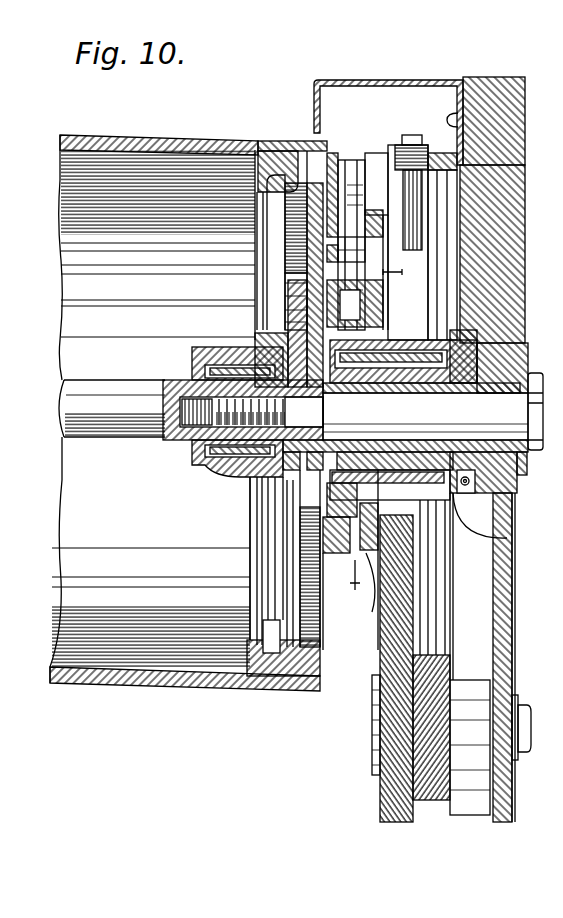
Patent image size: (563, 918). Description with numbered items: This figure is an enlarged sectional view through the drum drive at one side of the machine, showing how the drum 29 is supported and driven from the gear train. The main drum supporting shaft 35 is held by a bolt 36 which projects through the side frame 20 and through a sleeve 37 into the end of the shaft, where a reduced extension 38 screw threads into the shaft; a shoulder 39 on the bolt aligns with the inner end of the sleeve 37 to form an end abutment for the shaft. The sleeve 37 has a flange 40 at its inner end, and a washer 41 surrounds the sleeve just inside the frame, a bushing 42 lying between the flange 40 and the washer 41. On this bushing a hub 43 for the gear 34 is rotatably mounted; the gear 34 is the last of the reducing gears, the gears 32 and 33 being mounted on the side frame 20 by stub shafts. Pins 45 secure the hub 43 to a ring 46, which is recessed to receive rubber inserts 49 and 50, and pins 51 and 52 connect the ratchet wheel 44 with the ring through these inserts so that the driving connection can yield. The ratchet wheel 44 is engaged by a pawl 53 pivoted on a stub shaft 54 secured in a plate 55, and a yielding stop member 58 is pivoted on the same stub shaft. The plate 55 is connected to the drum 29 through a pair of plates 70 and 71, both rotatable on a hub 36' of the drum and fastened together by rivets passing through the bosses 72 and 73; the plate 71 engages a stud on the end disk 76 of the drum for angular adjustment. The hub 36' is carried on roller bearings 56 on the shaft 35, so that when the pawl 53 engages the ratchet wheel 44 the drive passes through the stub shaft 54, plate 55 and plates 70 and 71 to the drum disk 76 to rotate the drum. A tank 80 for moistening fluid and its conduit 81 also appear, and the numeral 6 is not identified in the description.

The drum 29 is at (77, 135).
The main drum supporting shaft 35 is at (78, 380).
The plate 70 is at (304, 194).
The rubber insert 50 is at (258, 297).
The plate 71 is at (233, 274).
The boss 72 is at (282, 500).
The end disk 76 is at (254, 531).
The boss 73 is at (262, 325).
The hub 36' is at (231, 333).
The reduced extension 38 is at (195, 383).
The shoulder 39 is at (304, 412).
The bolt 36 is at (425, 416).
The flange 40 is at (333, 440).
The bushing 42 is at (390, 445).
The sleeve 37 is at (477, 443).
The pins 45 is at (390, 352).
The hub 43 is at (478, 340).
The side frame 20 is at (523, 163).
The plate 55 is at (345, 165).
The yielding stop member 58 is at (358, 165).
The stub shaft 54 is at (350, 253).
The pin 52 is at (365, 310).
The gap 6 is at (372, 430).
The pawl 53 is at (376, 160).
The tank 80 is at (408, 193).
The ratchet wheel 44 is at (417, 270).
The washer 41 is at (532, 522).
The conduit 81 is at (480, 504).
The roller bearings 56 is at (192, 447).
The rubber insert 49 is at (330, 537).
The ring 46 is at (357, 583).
The pin 51 is at (362, 595).
The reducing gear 32 is at (380, 652).
The reducing gear 33 is at (446, 700).
The reducing gear 34 is at (445, 653).